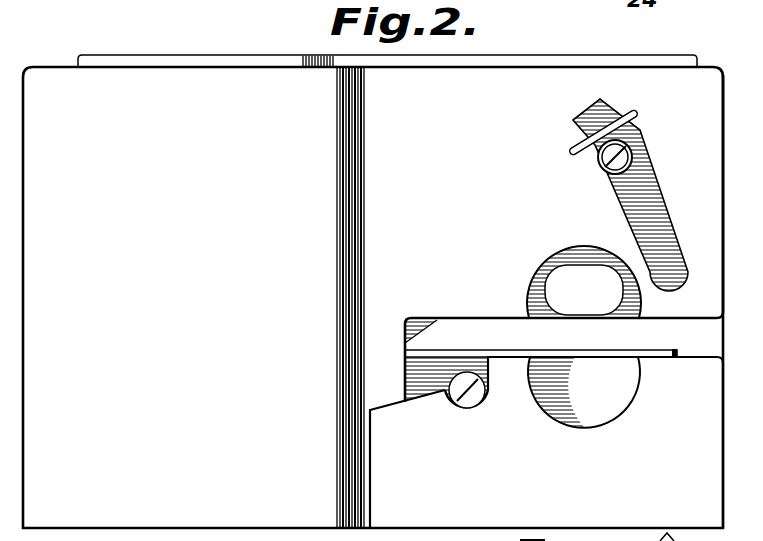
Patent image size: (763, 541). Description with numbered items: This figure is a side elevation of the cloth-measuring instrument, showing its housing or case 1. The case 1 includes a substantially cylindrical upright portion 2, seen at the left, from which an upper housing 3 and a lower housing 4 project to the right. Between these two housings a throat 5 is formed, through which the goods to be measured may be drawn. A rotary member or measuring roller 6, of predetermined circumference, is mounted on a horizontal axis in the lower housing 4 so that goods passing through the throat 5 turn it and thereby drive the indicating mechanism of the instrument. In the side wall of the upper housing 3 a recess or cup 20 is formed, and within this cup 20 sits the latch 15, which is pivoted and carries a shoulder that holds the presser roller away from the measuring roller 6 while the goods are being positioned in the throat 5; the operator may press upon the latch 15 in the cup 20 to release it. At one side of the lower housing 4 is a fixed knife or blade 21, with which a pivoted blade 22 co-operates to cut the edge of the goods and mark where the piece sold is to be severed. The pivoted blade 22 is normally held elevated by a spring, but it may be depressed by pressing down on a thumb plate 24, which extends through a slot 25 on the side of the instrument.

The housing or case 1 is at (433, 78).
The cylindrical upright portion 2 is at (273, 297).
The upper housing 3 is at (558, 216).
The lower housing 4 is at (546, 442).
The throat 5 is at (700, 337).
The measuring roller 6 is at (628, 354).
The latch 15 is at (584, 290).
The recess or cup 20 is at (560, 253).
The fixed knife or blade 21 is at (446, 382).
The pivoted blade 22 is at (422, 328).
The thumb plate 24 is at (576, 150).
The slot 25 is at (624, 197).